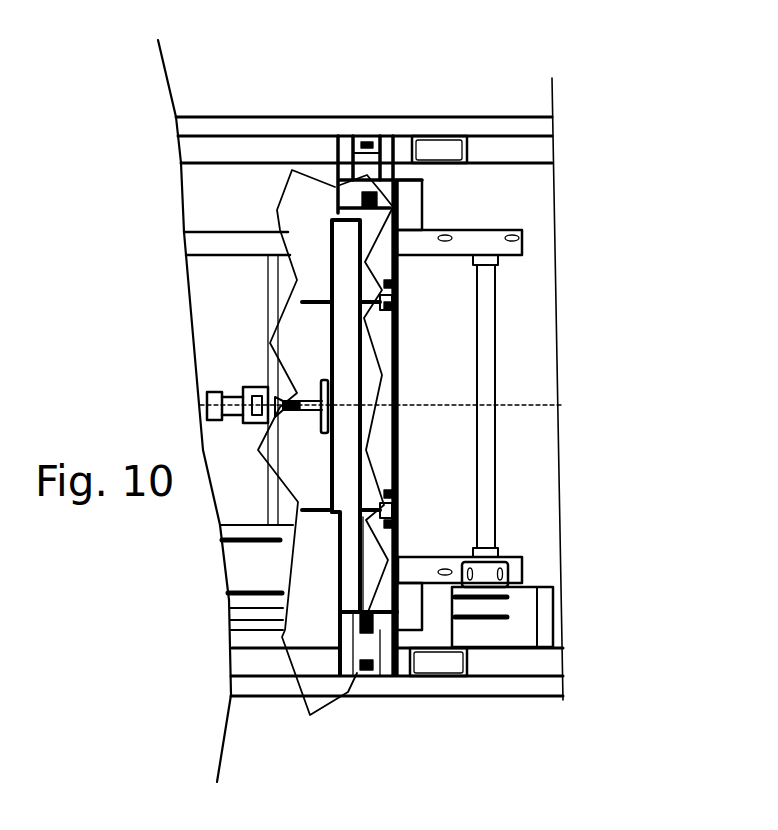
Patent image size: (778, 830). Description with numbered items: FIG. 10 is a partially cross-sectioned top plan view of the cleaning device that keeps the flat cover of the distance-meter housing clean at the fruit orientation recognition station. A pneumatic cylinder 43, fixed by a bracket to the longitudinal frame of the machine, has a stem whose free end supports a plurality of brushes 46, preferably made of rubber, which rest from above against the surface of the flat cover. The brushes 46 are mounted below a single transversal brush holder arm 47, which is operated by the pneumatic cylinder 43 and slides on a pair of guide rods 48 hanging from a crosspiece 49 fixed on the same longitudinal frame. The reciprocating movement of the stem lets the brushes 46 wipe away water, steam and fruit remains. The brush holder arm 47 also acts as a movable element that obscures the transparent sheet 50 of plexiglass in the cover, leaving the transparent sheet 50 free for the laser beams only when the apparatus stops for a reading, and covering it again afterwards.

The pneumatic cylinder 43 is at (230, 383).
The brushes 46 is at (581, 352).
The transversal brush holder arm 47 is at (338, 232).
The guide rods 48 is at (315, 295).
The crosspiece 49 is at (398, 537).
The transparent sheet 50 is at (533, 0).